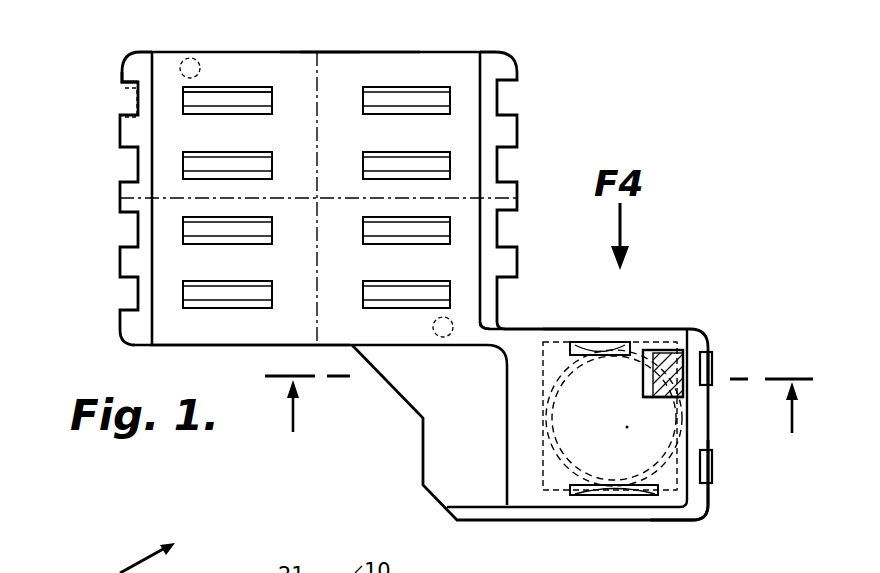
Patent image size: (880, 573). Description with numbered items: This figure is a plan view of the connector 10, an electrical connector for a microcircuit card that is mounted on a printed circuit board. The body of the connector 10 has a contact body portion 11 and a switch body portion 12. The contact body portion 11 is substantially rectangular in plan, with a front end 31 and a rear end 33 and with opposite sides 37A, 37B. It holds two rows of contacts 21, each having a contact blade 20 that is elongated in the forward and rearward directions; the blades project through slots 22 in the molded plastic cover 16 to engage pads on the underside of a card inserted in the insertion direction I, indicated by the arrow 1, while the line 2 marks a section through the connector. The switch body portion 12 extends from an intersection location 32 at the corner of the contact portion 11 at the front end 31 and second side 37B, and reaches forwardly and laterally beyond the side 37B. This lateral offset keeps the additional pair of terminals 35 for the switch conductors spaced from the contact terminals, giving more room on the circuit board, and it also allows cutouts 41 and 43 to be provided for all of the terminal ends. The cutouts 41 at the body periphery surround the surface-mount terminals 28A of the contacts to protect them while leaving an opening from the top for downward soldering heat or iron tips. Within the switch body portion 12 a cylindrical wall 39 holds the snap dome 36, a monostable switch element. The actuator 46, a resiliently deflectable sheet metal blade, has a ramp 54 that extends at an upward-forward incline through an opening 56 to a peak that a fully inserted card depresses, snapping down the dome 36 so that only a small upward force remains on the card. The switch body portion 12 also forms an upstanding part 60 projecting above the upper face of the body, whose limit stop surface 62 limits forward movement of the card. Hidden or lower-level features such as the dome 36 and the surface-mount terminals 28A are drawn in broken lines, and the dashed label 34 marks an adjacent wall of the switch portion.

The viewing direction arrow 1 is at (133, 557).
The section line 2- 2 is at (539, 423).
The connector 10 is at (610, 135).
The contact body portion 11 is at (395, 52).
The switch body portion 12 is at (650, 329).
The cover 16 is at (342, 80).
The contact blade 20 is at (213, 97).
The contacts 21 is at (418, 98).
The slots 22 is at (235, 97).
The surface-mount terminals 28A is at (123, 103).
The front end 31 is at (518, 133).
The intersection location 32 is at (498, 337).
The rear end 33 is at (120, 200).
The wall 34 is at (564, 330).
The terminals 35 is at (708, 365).
The snap dome 36 is at (552, 500).
The first side 37A is at (370, 50).
The second side 37B is at (230, 347).
The cylindrical wall 39 is at (627, 342).
The cutouts 41 is at (123, 85).
The cutout 43 is at (708, 488).
The switch actuator 46 is at (703, 373).
The ramp 54 is at (680, 383).
The opening 56 is at (673, 398).
The upstanding part 60 is at (712, 462).
The limit stop surface 62 is at (688, 522).